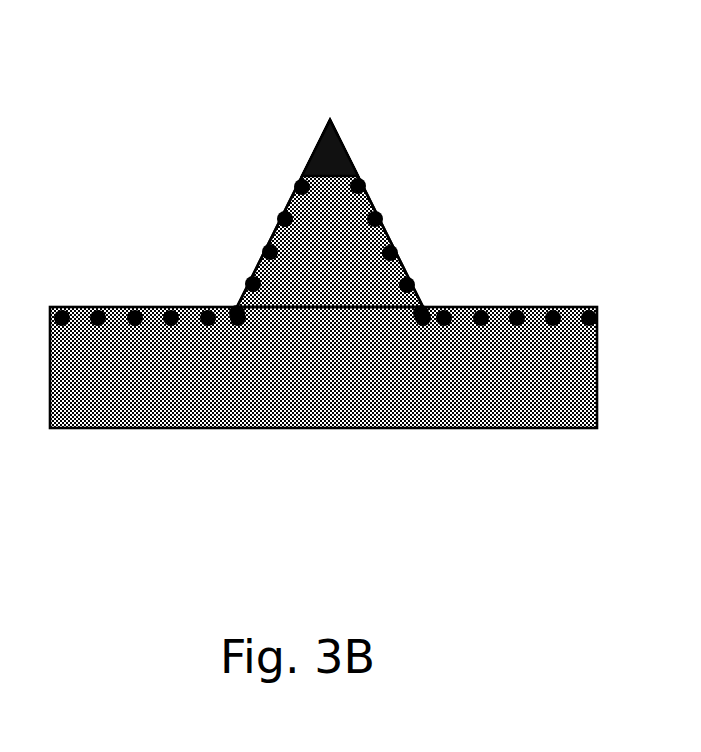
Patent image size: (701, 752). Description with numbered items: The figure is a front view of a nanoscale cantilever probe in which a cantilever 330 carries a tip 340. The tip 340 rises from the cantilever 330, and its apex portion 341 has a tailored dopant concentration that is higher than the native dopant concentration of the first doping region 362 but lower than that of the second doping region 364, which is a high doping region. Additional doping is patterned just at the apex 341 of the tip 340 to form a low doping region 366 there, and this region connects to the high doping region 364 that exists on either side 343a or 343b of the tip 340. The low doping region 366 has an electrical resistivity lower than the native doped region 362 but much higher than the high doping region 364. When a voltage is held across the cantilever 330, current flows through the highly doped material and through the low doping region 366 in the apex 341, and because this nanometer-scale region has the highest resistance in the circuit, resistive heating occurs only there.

The cantilever 330 is at (618, 357).
The tip 340 is at (458, 170).
The apex portion of the tip 341 is at (320, 148).
The first side of the tip 343a is at (373, 200).
The second side of the tip 343b is at (273, 232).
The first doping region 362 is at (335, 345).
The second doping region 364 is at (241, 237).
The low doping region 366 is at (343, 130).